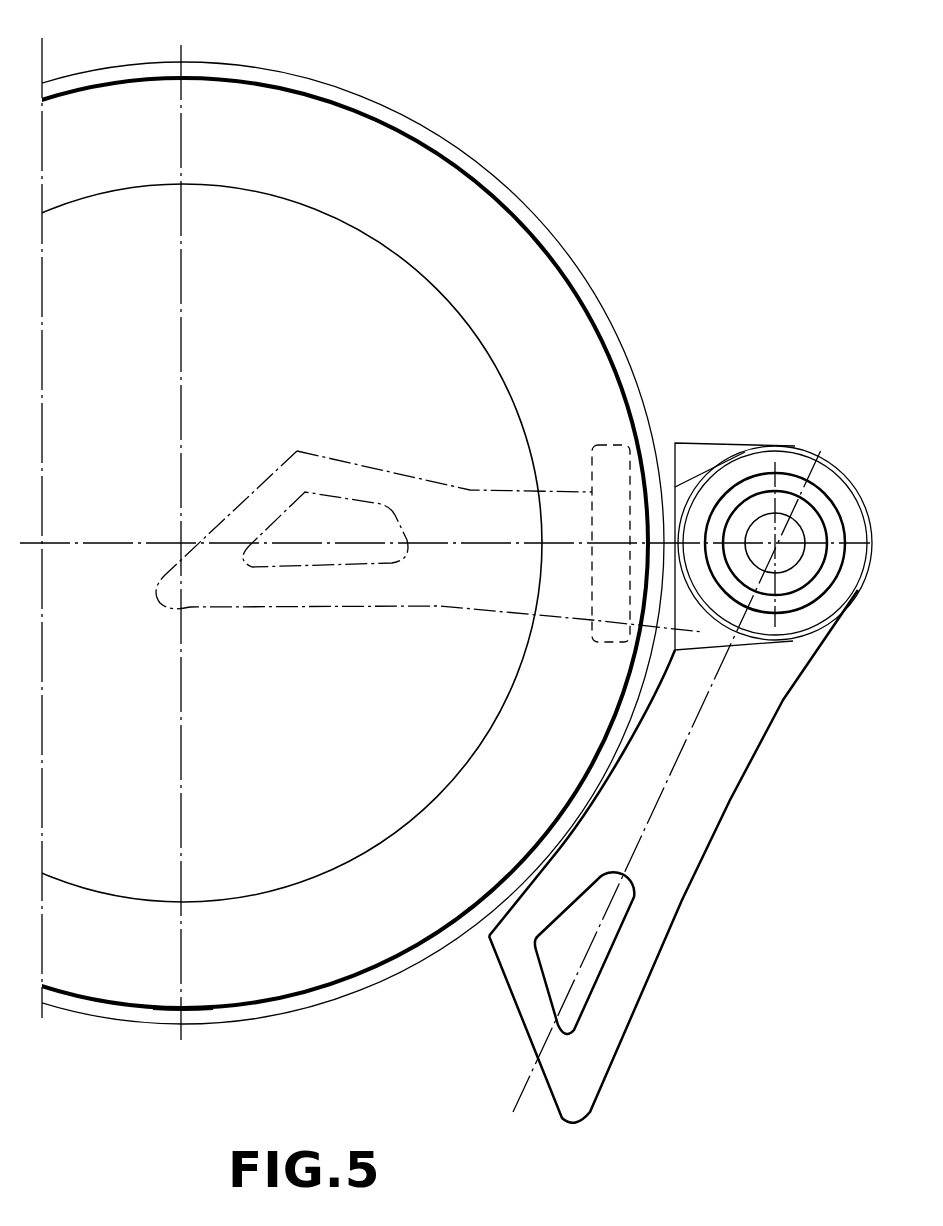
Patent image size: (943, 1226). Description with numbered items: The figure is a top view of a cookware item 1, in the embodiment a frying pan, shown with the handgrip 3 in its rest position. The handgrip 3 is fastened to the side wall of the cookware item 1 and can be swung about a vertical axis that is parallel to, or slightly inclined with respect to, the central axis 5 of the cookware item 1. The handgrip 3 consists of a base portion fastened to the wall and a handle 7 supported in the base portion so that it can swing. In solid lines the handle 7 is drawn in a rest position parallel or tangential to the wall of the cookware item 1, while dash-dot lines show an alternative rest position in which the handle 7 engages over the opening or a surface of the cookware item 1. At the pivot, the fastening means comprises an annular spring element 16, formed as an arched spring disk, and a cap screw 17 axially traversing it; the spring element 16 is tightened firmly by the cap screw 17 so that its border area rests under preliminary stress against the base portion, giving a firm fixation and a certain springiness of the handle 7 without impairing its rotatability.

The cookware item 1 is at (113, 116).
The handgrip 3 is at (673, 372).
The central axis 5 is at (183, 965).
The handle 7 is at (476, 502).
The spring element 16 is at (760, 510).
The cap screw 17 is at (783, 557).